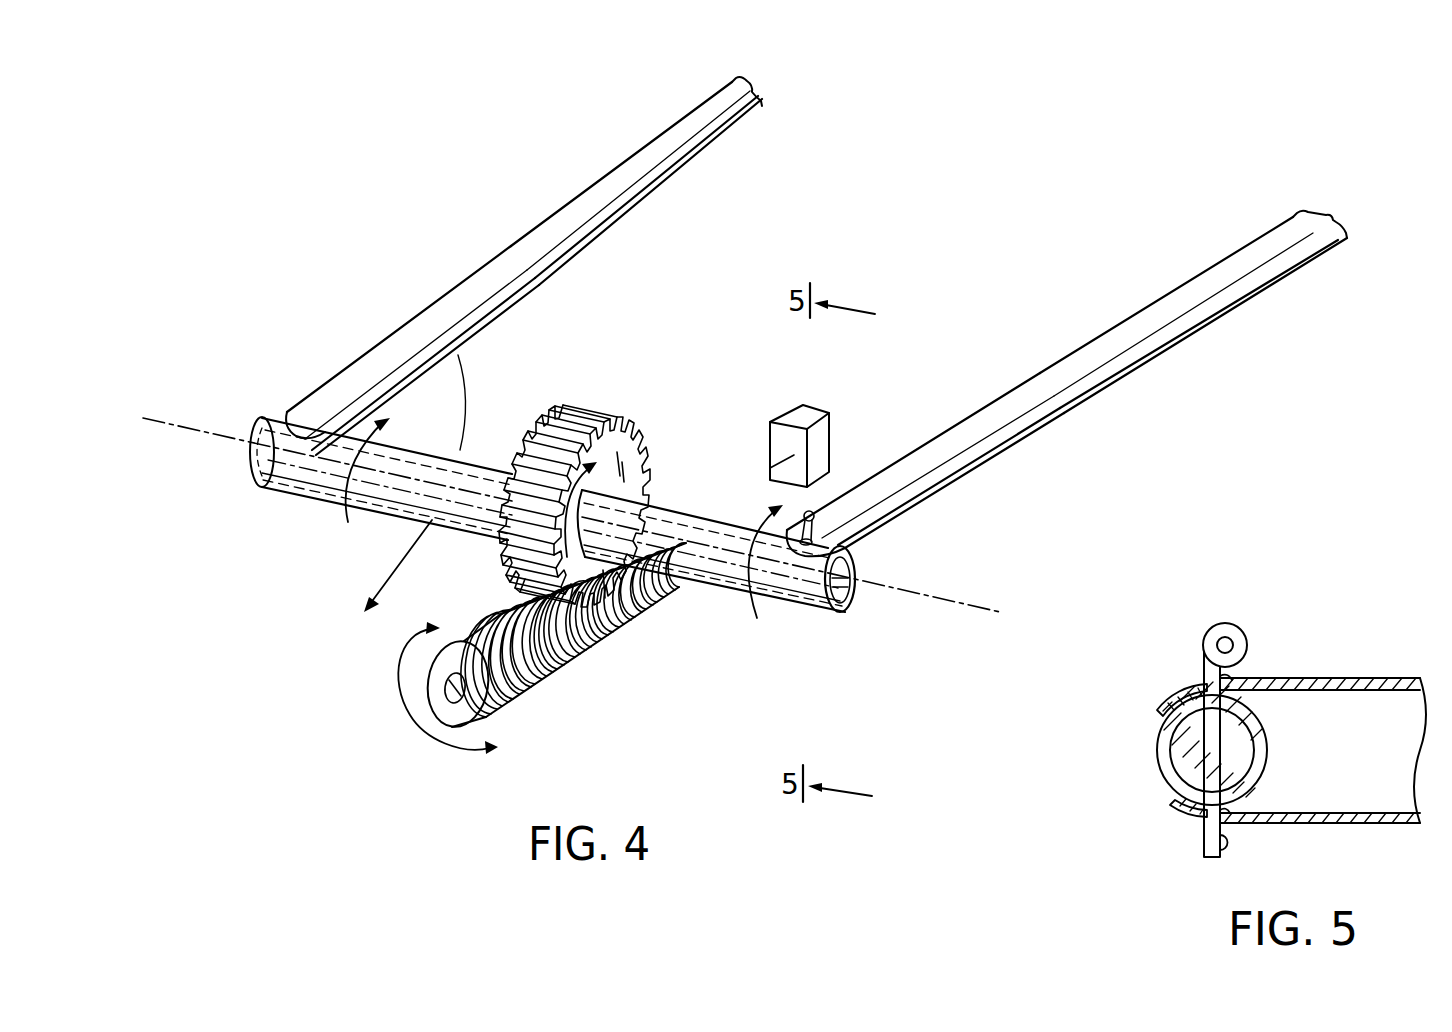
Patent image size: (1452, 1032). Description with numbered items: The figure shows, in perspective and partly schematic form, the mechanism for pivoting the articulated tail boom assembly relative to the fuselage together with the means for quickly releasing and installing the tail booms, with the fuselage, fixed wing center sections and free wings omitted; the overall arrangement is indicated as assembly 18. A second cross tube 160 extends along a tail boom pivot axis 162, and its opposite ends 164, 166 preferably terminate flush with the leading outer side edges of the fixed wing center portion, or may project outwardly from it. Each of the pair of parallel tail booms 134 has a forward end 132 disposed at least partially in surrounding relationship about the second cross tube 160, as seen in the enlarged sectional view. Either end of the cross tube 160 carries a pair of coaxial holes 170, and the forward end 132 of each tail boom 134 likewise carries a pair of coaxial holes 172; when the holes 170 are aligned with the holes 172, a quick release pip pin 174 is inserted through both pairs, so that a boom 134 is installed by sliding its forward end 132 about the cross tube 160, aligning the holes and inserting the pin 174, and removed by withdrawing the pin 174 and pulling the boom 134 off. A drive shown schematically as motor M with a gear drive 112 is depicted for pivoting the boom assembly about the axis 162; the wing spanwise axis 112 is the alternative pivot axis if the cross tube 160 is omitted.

In FIG. 4, the tubular assembly 18 is at (1188, 235).
In FIG. 4, the spanwise axis 112 is at (492, 477).
In FIG. 4, the forward end 132 is at (340, 392).
In FIG. 5, the forward end 132 is at (1355, 678).
In FIG. 4, the tail boom 134 is at (663, 172).
In FIG. 4, the second cross tube 160 is at (468, 507).
In FIG. 5, the second cross tube 160 is at (1160, 762).
In FIG. 4, the tail boom pivot axis 162 is at (1004, 622).
In FIG. 4, the end of second cross tube 164 is at (813, 590).
In FIG. 4, the end of second cross tube 166 is at (277, 473).
In FIG. 5, the coaxial holes 170 is at (1203, 677).
In FIG. 5, the coaxial holes 172 is at (1238, 678).
In FIG. 4, the pip pin 174 is at (812, 520).
In FIG. 5, the pip pin 174 is at (1223, 623).
In FIG. 4, the motor M is at (803, 404).